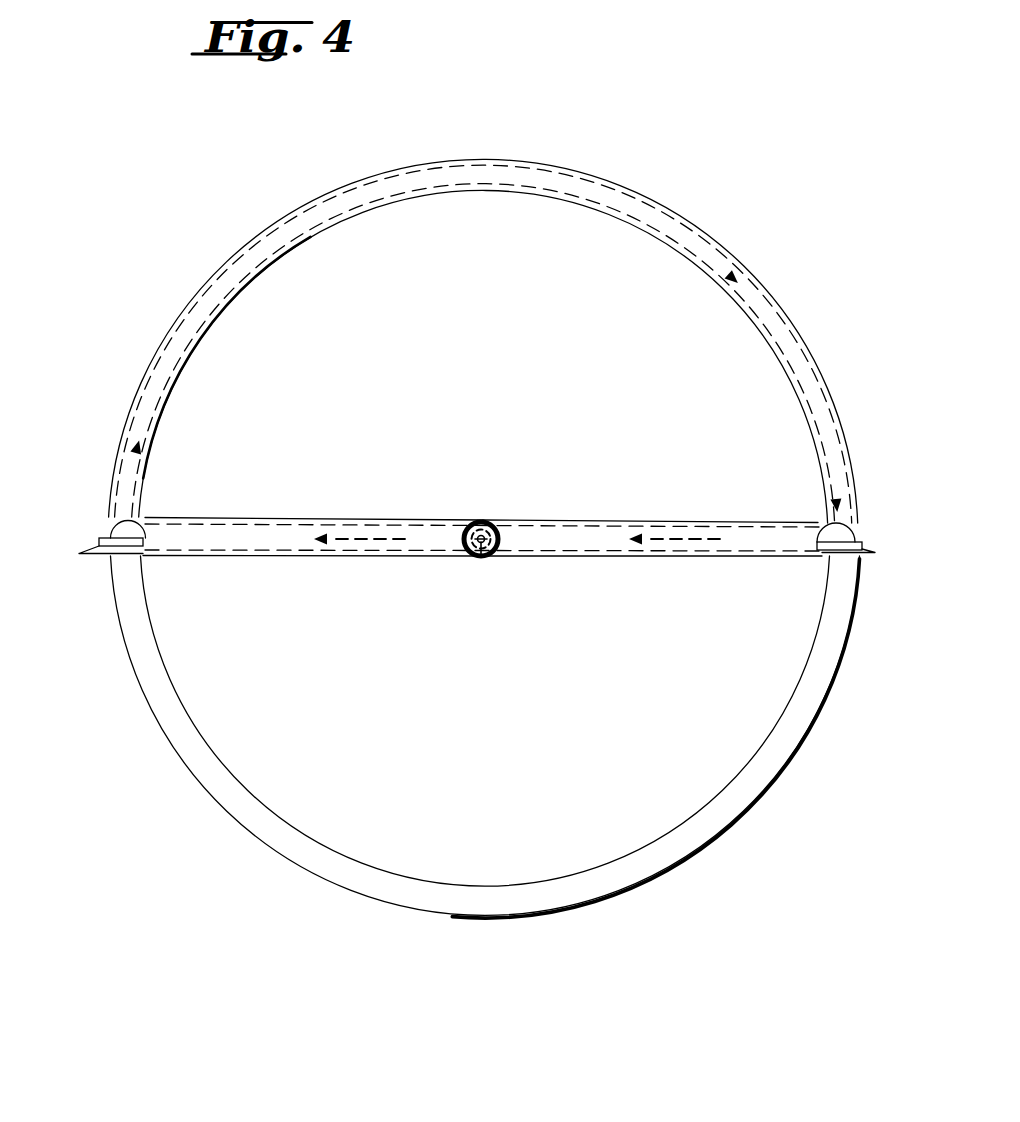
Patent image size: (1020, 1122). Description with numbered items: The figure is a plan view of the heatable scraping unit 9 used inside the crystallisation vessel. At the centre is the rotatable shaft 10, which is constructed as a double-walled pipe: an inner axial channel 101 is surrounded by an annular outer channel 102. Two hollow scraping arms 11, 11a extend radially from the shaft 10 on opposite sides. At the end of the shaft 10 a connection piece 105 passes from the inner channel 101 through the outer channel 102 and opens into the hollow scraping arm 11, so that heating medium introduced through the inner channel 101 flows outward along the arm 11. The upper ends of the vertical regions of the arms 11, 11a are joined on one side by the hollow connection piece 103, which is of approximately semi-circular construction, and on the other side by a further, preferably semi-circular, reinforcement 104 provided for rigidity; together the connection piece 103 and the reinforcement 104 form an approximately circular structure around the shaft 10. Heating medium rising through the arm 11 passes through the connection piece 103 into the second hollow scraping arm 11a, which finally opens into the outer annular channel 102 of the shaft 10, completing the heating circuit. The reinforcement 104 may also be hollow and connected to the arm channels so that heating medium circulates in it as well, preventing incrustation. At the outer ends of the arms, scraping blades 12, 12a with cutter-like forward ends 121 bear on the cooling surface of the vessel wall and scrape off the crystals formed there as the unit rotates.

The scraping unit 9 is at (484, 546).
The shaft 10 is at (487, 540).
The scraping arm 11 is at (136, 519).
The second scraping arm 11a is at (826, 519).
The scraping blade 12 is at (95, 557).
The scraping blade 12a is at (860, 563).
The inner axial channel 101 is at (496, 557).
The annular outer channel 102 is at (497, 522).
The hollow connection piece 103 is at (607, 198).
The reinforcement 104 is at (607, 878).
The connection piece 105 is at (463, 546).
The cutter-like forward end 121 is at (80, 554).